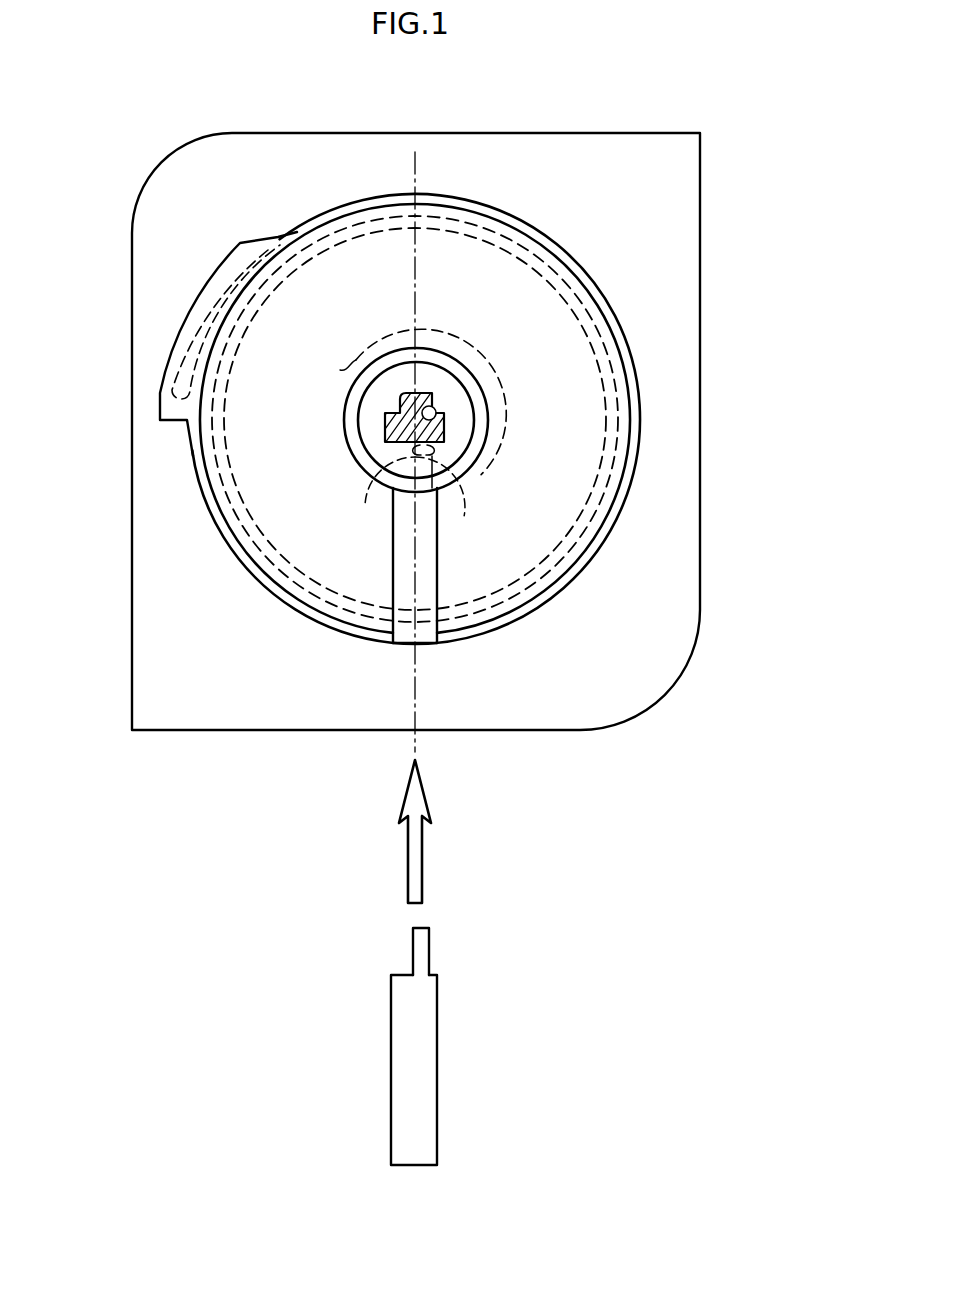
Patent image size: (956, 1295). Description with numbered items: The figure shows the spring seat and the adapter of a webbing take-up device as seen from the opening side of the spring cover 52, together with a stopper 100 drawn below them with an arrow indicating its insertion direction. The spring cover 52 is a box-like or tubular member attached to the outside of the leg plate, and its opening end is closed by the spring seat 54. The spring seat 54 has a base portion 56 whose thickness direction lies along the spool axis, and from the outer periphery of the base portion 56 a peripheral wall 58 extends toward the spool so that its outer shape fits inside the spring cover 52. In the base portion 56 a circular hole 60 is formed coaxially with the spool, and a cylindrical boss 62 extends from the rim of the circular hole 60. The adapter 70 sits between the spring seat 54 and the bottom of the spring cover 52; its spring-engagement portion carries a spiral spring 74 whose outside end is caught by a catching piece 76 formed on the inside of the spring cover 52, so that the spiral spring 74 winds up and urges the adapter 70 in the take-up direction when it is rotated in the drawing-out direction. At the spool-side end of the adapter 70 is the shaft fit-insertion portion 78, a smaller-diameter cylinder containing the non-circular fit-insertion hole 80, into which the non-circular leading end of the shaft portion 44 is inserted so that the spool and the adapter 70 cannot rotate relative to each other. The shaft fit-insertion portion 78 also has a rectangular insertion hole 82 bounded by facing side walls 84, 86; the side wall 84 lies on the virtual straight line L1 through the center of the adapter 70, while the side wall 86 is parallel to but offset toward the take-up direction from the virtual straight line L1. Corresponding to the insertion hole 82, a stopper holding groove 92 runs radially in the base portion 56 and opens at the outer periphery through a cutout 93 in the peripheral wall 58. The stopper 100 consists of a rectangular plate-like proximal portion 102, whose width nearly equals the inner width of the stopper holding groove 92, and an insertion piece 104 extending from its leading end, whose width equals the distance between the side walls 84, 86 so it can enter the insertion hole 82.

The spring cover 52 is at (677, 233).
The virtual straight line L1 is at (418, 158).
The spring seat 54 is at (575, 502).
The base portion 56 is at (545, 540).
The peripheral wall 58 is at (520, 620).
The spiral spring 74 is at (253, 553).
The catching piece 76 is at (195, 335).
The shaft fit-insertion portion 78 is at (449, 390).
The adapter 70 is at (441, 384).
The fit-insertion hole 80 is at (400, 430).
The shaft portion 44 is at (452, 430).
The circular hole 60 is at (400, 430).
The boss 62 is at (360, 468).
The insertion hole 82 is at (464, 516).
The side wall 84 is at (367, 505).
The side wall 86 is at (433, 460).
The stopper holding groove 92 is at (440, 562).
The cutout 93 is at (427, 644).
The stopper 100 is at (462, 1046).
The proximal portion 102 is at (432, 1097).
The insertion piece 104 is at (425, 947).